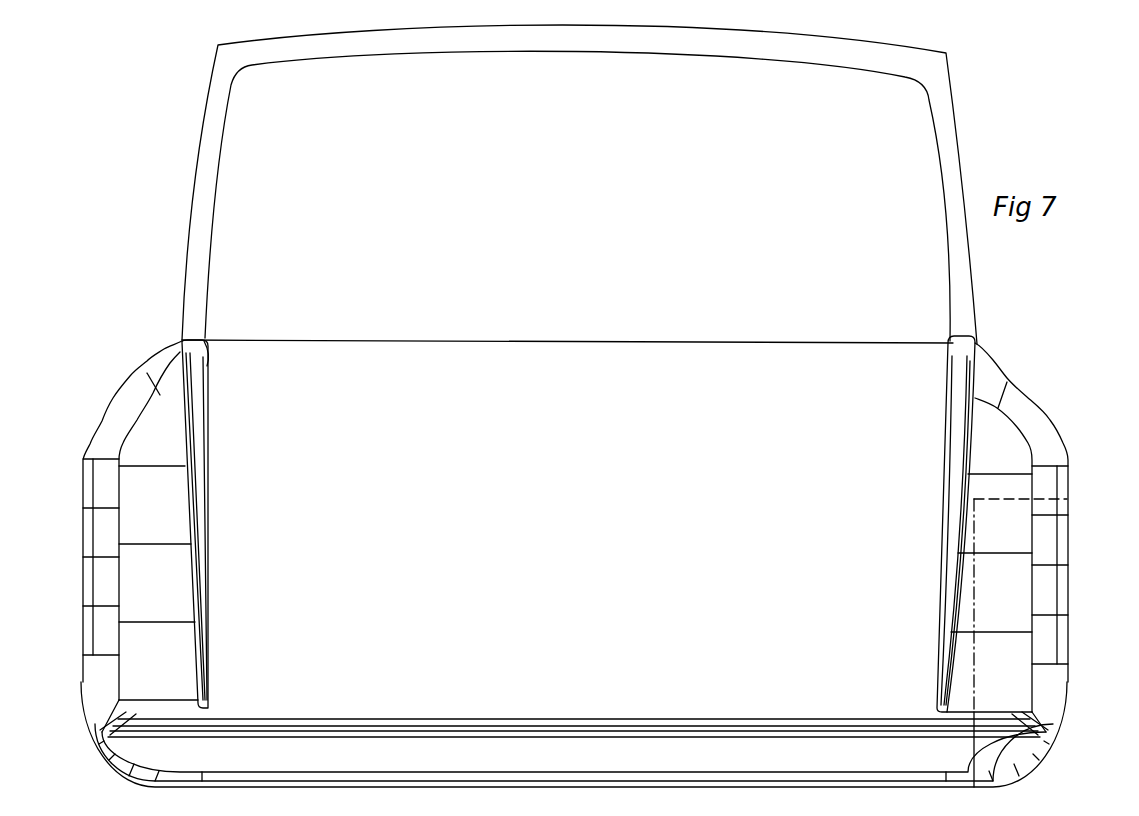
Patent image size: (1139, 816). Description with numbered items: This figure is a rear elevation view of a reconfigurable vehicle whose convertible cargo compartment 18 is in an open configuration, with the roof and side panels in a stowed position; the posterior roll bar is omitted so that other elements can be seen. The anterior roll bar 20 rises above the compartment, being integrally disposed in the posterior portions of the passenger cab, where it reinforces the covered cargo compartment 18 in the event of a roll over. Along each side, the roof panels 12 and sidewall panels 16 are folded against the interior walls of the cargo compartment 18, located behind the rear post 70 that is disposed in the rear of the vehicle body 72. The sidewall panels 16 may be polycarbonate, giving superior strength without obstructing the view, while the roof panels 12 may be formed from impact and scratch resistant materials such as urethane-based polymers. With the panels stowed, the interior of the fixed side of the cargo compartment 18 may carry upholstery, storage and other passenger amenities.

The anterior roll bar 20 is at (196, 223).
The rear post 70 is at (202, 363).
The roof panel 12 is at (192, 401).
The sidewall panel 16 is at (179, 451).
The cargo compartment 18 is at (506, 538).
The vehicle body 72 is at (1045, 511).